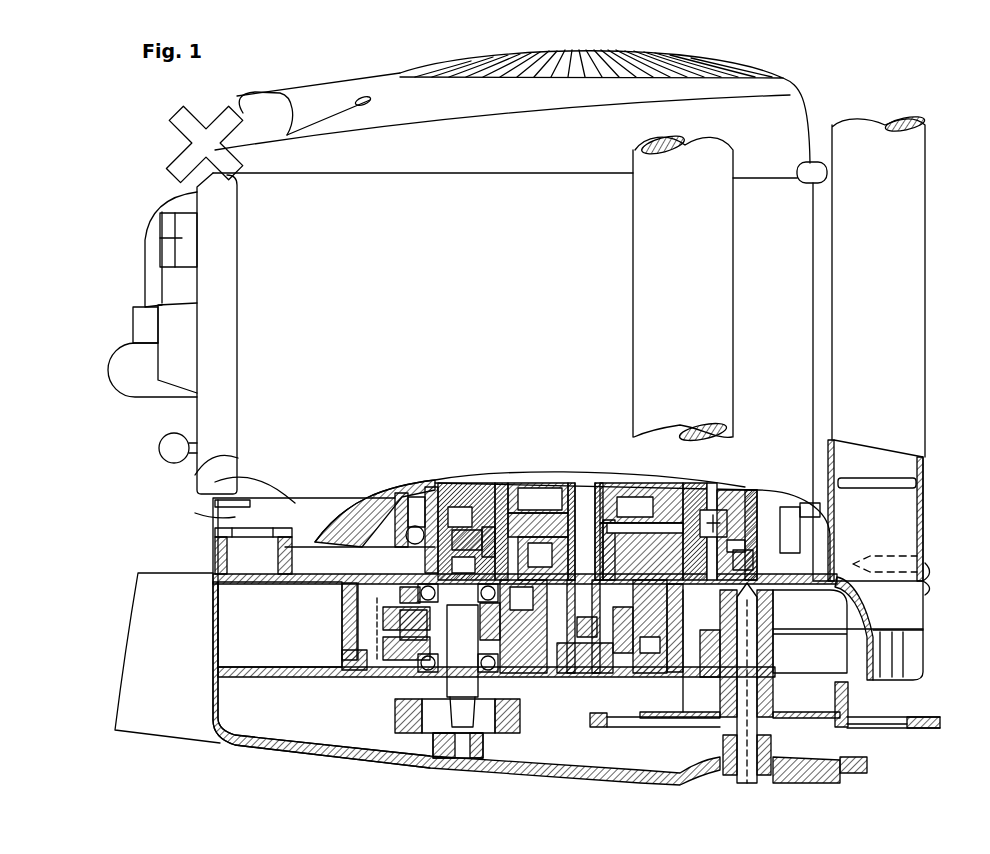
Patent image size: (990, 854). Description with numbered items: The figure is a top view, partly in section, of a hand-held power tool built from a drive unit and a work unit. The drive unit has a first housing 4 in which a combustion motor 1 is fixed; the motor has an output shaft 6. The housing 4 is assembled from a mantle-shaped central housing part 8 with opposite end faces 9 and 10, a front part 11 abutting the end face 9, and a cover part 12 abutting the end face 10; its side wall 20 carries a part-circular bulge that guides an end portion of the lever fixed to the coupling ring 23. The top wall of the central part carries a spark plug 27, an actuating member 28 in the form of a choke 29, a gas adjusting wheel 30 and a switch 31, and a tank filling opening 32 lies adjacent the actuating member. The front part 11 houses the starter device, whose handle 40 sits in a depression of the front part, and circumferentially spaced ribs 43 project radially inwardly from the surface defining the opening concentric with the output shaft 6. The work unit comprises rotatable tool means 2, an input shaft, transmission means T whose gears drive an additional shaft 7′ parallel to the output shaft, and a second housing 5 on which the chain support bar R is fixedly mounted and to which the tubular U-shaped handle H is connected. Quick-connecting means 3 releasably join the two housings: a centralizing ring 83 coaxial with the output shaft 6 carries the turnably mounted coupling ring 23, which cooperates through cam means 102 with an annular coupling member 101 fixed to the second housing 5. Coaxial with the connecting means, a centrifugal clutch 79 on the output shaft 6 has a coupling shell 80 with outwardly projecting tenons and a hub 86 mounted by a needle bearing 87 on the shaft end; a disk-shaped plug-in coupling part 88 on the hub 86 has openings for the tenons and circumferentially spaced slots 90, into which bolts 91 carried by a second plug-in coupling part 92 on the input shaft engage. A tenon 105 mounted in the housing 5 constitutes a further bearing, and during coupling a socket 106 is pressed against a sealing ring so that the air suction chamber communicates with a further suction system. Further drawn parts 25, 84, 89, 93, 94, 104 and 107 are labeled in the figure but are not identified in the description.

The combustion motor 1 is at (790, 326).
The rotatable tool means 2 is at (847, 731).
The quick-connecting means 3 is at (765, 498).
The first housing 4 is at (818, 278).
The second housing 5 is at (848, 693).
The output shaft 6 is at (588, 533).
The additional shaft 7′ is at (458, 682).
The central housing part 8 is at (797, 218).
The end face 9 is at (343, 173).
The end face 10 is at (213, 497).
The front part 11 is at (780, 130).
The cover part 12 is at (237, 517).
The side wall 20 is at (258, 222).
The coupling ring 23 is at (787, 592).
The belt cover 25 is at (225, 457).
The spark plug 27 is at (133, 353).
The actuating member 28 is at (138, 287).
The choke 29 is at (165, 237).
The gas adjusting wheel 30 is at (173, 358).
The switch 31 is at (159, 453).
The tank filling opening 32 is at (212, 128).
The handle 40 is at (262, 108).
The ribs 43 is at (720, 72).
The centrifugal clutch 79 is at (622, 505).
The coupling shell 80 is at (647, 483).
The centralizing ring 83 is at (473, 537).
The bearing 84 is at (732, 487).
The hub 86 is at (593, 523).
The needle bearing 87 is at (543, 500).
The plug-in coupling part 88 is at (710, 487).
The bearing housing 89 is at (510, 490).
The slots 90 is at (463, 537).
The bolts 91 is at (577, 520).
The second plug-in coupling part 92 is at (443, 490).
The clutch drum 93 is at (423, 500).
The lever 94 is at (757, 563).
The annular coupling member 101 is at (418, 487).
The cam means 102 is at (757, 487).
The spring 104 is at (693, 487).
The tenon 105 is at (587, 653).
The socket 106 is at (217, 567).
The discharge chamber 107 is at (230, 602).
The handle H is at (840, 302).
The transmission means T is at (528, 677).
The chain support bar R is at (610, 727).